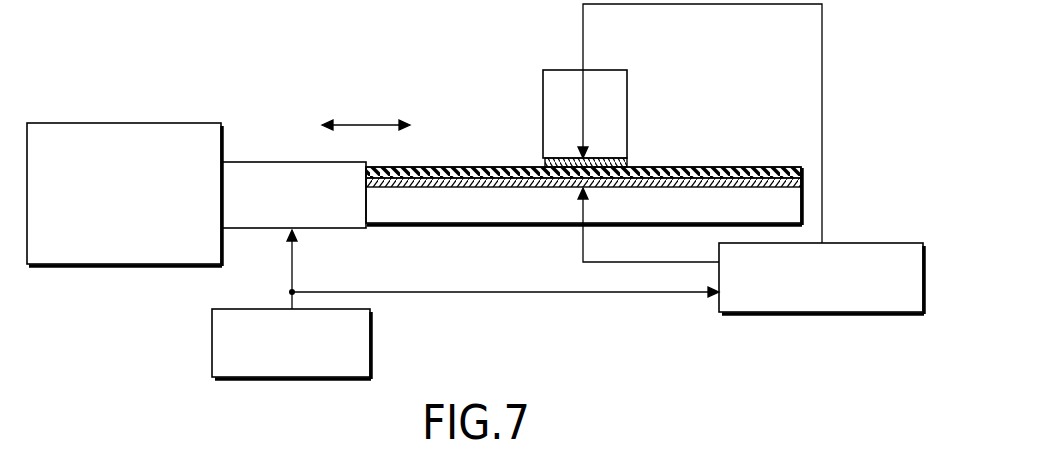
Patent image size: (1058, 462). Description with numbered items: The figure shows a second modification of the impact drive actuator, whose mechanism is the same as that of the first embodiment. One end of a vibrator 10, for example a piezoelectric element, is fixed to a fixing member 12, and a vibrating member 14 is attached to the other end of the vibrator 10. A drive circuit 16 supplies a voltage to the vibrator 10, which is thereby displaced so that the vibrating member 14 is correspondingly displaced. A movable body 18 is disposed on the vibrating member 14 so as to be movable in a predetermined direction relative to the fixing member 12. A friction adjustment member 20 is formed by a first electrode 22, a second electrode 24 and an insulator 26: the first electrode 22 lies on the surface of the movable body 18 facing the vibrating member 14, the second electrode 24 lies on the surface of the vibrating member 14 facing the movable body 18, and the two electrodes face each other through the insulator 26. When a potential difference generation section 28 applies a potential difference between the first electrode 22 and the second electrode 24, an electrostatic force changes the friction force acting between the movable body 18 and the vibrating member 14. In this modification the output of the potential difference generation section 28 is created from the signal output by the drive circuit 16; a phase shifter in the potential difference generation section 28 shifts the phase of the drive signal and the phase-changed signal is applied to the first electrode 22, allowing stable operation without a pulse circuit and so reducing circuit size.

The vibrator 10 is at (278, 160).
The fixing member 12 is at (106, 120).
The vibrating member 14 is at (584, 173).
The drive circuit 16 is at (212, 346).
The movable body 18 is at (543, 97).
The friction adjustment member 20 is at (583, 128).
The first electrode 22 is at (618, 141).
The second electrode 24 is at (712, 172).
The insulator 26 is at (762, 167).
The potential difference generation section 28 is at (829, 316).